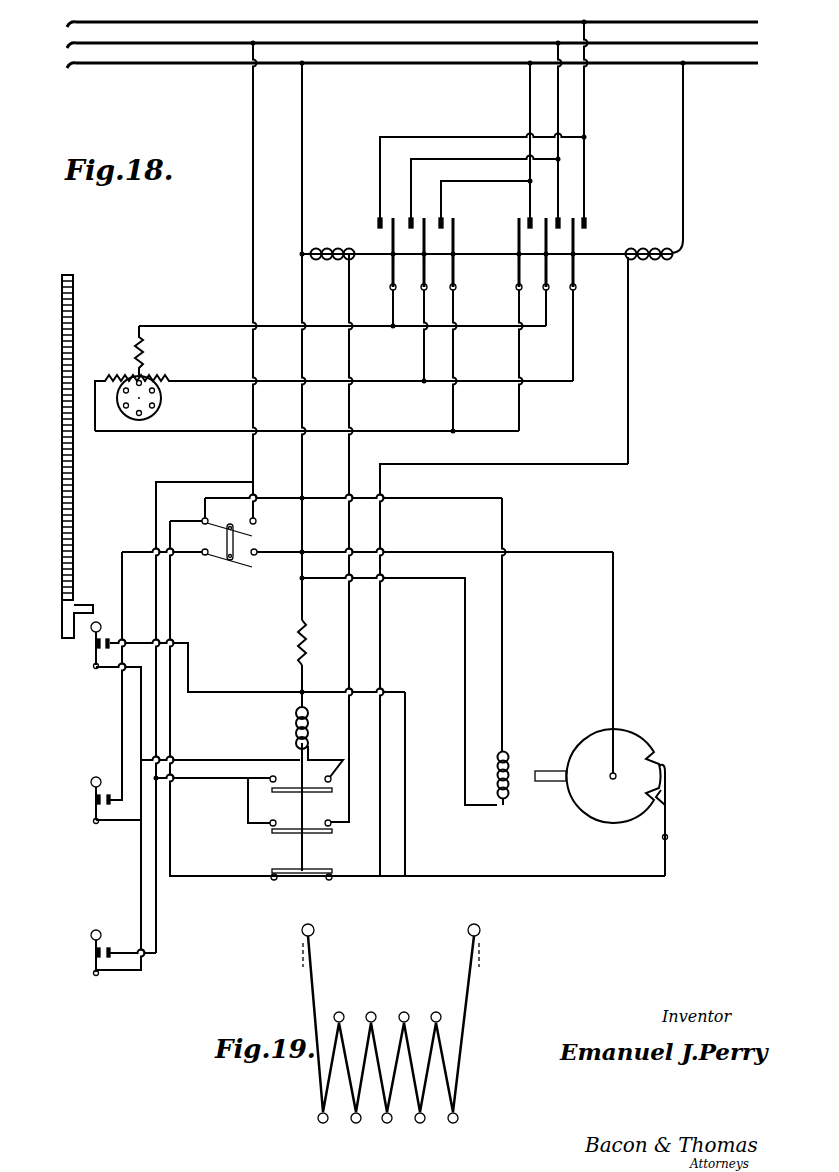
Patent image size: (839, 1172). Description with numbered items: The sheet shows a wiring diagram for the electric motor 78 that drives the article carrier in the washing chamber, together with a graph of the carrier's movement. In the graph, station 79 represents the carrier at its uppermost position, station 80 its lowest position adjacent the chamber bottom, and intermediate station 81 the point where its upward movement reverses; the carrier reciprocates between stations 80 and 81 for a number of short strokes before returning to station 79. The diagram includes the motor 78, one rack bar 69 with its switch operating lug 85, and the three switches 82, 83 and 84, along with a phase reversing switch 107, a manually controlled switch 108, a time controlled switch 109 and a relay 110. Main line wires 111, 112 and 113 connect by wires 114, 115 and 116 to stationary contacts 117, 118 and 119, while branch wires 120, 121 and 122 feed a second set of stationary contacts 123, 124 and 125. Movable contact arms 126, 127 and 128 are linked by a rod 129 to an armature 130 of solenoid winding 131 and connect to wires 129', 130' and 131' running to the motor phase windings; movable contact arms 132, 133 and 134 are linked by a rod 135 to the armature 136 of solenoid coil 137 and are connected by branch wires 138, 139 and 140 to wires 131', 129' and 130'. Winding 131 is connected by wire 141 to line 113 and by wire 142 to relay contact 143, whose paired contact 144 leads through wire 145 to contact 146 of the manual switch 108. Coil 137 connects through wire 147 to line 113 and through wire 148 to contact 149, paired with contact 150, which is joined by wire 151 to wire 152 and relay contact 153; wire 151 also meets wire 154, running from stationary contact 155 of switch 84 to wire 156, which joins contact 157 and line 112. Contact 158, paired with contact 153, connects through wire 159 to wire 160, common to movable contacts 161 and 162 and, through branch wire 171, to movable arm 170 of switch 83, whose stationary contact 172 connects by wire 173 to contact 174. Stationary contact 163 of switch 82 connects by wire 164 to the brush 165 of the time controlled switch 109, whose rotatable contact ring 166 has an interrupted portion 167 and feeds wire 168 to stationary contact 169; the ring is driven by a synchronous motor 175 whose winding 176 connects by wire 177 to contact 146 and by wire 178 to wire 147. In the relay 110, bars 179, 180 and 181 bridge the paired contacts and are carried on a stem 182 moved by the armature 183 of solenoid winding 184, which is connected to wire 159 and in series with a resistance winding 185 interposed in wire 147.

In FIG. 18, the main line wire 111 is at (67, 26).
In FIG. 18, the main line wire 112 is at (67, 47).
In FIG. 18, the main line wire 113 is at (67, 67).
In FIG. 18, the wire 114 is at (585, 121).
In FIG. 18, the wire 115 is at (559, 91).
In FIG. 18, the wire 116 is at (529, 106).
In FIG. 18, the stationary contact 117 is at (586, 222).
In FIG. 18, the stationary contact 118 is at (573, 205).
In FIG. 18, the stationary contact 119 is at (519, 220).
In FIG. 18, the branch wire 120 is at (417, 137).
In FIG. 18, the branch wire 121 is at (411, 165).
In FIG. 18, the branch wire 122 is at (441, 190).
In FIG. 18, the stationary contact 123 is at (453, 232).
In FIG. 18, the stationary contact 124 is at (392, 222).
In FIG. 18, the stationary contact 125 is at (376, 242).
In FIG. 18, the movable contact arm 126 is at (575, 274).
In FIG. 18, the movable contact arm 127 is at (548, 290).
In FIG. 18, the movable contact arm 128 is at (522, 290).
In FIG. 18, the rod 129 is at (629, 238).
In FIG. 18, the armature 130 is at (672, 260).
In FIG. 18, the solenoid winding 131 is at (658, 278).
In FIG. 18, the movable contact arm 132 is at (455, 288).
In FIG. 18, the movable contact arm 133 is at (424, 284).
In FIG. 18, the movable contact arm 134 is at (393, 283).
In FIG. 18, the rod 135 is at (348, 262).
In FIG. 18, the armature 136 is at (302, 254).
In FIG. 18, the solenoid coil 137 is at (343, 240).
In FIG. 18, the branch wire 138 is at (455, 371).
In FIG. 18, the branch wire 139 is at (423, 358).
In FIG. 18, the branch wire 140 is at (393, 322).
In FIG. 18, the wire 131' is at (496, 352).
In FIG. 18, the wire 130' is at (546, 350).
In FIG. 18, the wire 129' is at (599, 382).
In FIG. 18, the wire 141 is at (684, 164).
In FIG. 18, the wire 142 is at (630, 416).
In FIG. 18, the contact 143 is at (332, 880).
In FIG. 18, the contact 144 is at (277, 880).
In FIG. 18, the wire 145 is at (172, 617).
In FIG. 18, the contact 146 is at (203, 518).
In FIG. 18, the wire 147 is at (301, 165).
In FIG. 18, the wire 148 is at (378, 453).
In FIG. 18, the contact 149 is at (330, 827).
In FIG. 18, the contact 150 is at (273, 827).
In FIG. 18, the wire 151 is at (247, 801).
In FIG. 18, the wire 152 is at (197, 782).
In FIG. 18, the contact 153 is at (296, 802).
In FIG. 18, the wire 154 is at (154, 496).
In FIG. 18, the stationary contact 155 is at (109, 946).
In FIG. 18, the wire 156 is at (251, 107).
In FIG. 18, the contact 157 is at (256, 523).
In FIG. 18, the contact 158 is at (331, 775).
In FIG. 18, the wire 159 is at (222, 755).
In FIG. 18, the wire 160 is at (139, 725).
In FIG. 18, the movable contact 161 is at (94, 951).
In FIG. 18, the movable contact 162 is at (95, 634).
In FIG. 18, the stationary contact 163 is at (107, 650).
In FIG. 18, the wire 164 is at (505, 878).
In FIG. 18, the brush 165 is at (668, 816).
In FIG. 18, the rotatable contact 166 is at (578, 740).
In FIG. 18, the interrupted portion 167 is at (658, 818).
In FIG. 18, the wire 168 is at (615, 640).
In FIG. 18, the stationary contact 169 is at (257, 556).
In FIG. 18, the movable contact arm 170 is at (94, 790).
In FIG. 18, the branch wire 171 is at (112, 823).
In FIG. 18, the stationary contact 172 is at (110, 790).
In FIG. 18, the wire 173 is at (120, 755).
In FIG. 18, the stationary contact 174 is at (204, 556).
In FIG. 18, the synchronous motor 175 is at (515, 804).
In FIG. 18, the winding 176 is at (498, 765).
In FIG. 18, the wire 177 is at (504, 652).
In FIG. 18, the wire 178 is at (463, 688).
In FIG. 18, the bar 179 is at (272, 870).
In FIG. 18, the bar 180 is at (311, 826).
In FIG. 18, the bar 181 is at (276, 766).
In FIG. 18, the stem 182 is at (310, 788).
In FIG. 18, the armature 183 is at (300, 705).
In FIG. 18, the solenoid winding 184 is at (309, 716).
In FIG. 18, the resistance winding 185 is at (304, 660).
In FIG. 18, the phase reversing switch 107 is at (487, 266).
In FIG. 18, the manually controlled switch 108 is at (231, 561).
In FIG. 18, the time controlled switch 109 is at (664, 748).
In FIG. 18, the relay 110 is at (258, 841).
In FIG. 18, the rack bar 69 is at (60, 366).
In FIG. 18, the electric motor 78 is at (162, 408).
In FIG. 18, the switch 82 is at (94, 662).
In FIG. 18, the switch 83 is at (94, 813).
In FIG. 18, the switch 84 is at (94, 963).
In FIG. 18, the switch operating lug 85 is at (84, 604).
In FIG. 19, the station 79 is at (301, 930).
In FIG. 19, the station 80 is at (352, 1123).
In FIG. 19, the station 81 is at (341, 1012).